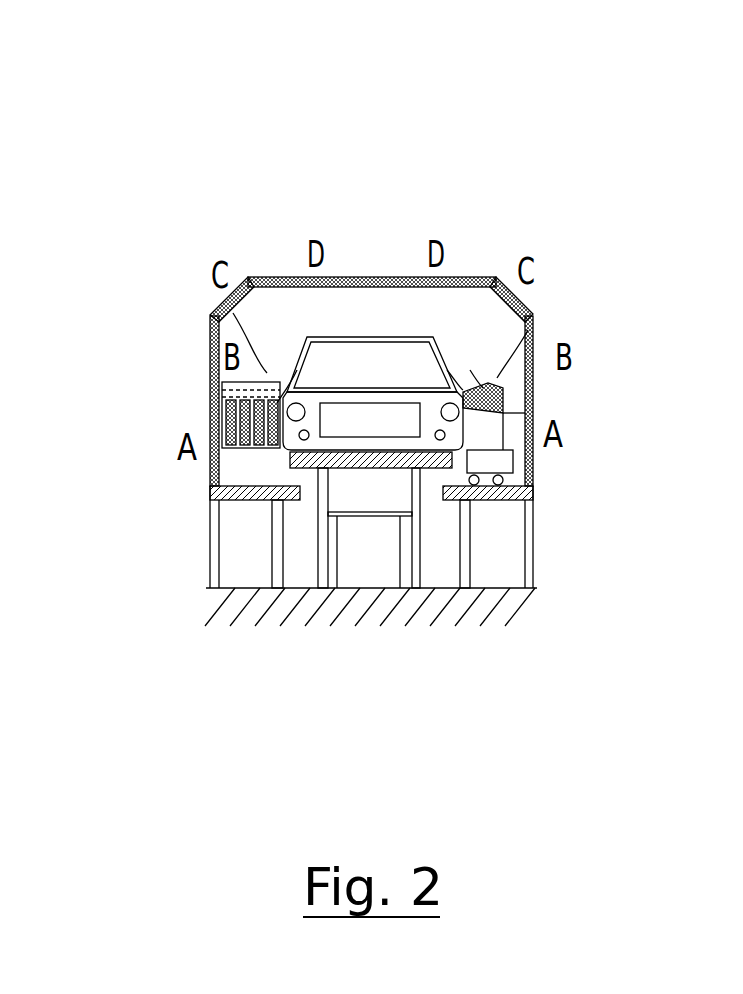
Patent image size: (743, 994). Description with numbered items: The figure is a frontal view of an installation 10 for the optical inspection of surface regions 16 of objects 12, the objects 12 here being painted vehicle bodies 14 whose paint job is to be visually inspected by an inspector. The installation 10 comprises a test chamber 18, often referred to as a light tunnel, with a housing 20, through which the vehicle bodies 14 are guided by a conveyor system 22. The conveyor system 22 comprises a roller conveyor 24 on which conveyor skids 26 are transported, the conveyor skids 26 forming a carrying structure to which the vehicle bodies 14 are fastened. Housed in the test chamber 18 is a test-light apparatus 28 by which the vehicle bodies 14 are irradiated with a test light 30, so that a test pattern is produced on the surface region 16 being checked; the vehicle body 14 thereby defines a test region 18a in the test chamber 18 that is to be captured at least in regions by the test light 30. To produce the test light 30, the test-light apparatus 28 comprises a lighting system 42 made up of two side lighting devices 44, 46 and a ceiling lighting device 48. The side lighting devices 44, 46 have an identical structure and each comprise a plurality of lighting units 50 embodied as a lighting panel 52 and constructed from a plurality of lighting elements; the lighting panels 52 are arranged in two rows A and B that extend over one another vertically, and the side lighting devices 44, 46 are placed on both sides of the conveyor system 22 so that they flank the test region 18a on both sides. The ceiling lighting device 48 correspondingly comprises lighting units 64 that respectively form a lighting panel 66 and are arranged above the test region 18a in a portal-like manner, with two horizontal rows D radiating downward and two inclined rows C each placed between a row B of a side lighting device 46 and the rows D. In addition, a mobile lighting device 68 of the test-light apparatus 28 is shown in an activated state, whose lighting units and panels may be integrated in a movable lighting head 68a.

The installation 10 is at (644, 120).
The object 12 is at (352, 326).
The vehicle body 14 is at (400, 333).
The surface region 16 is at (430, 277).
The test chamber 18 is at (533, 312).
The test region 18a is at (458, 326).
The housing 20 is at (287, 277).
The conveyor system 22 is at (376, 532).
The roller conveyor 24 is at (403, 503).
The conveyor skid 26 is at (430, 470).
The test-light apparatus 28 is at (541, 453).
The test light 30 is at (490, 343).
The lighting system 42 is at (243, 270).
The side lighting device 44 is at (541, 384).
The side lighting device 46 is at (212, 375).
The ceiling lighting device 48 is at (376, 273).
The lighting unit 50 is at (212, 330).
The lighting panel 52 is at (213, 358).
The lighting unit 64 is at (470, 378).
The lighting panel 66 is at (477, 392).
The mobile lighting device 68 is at (536, 537).
The movable lighting head 68a is at (533, 333).